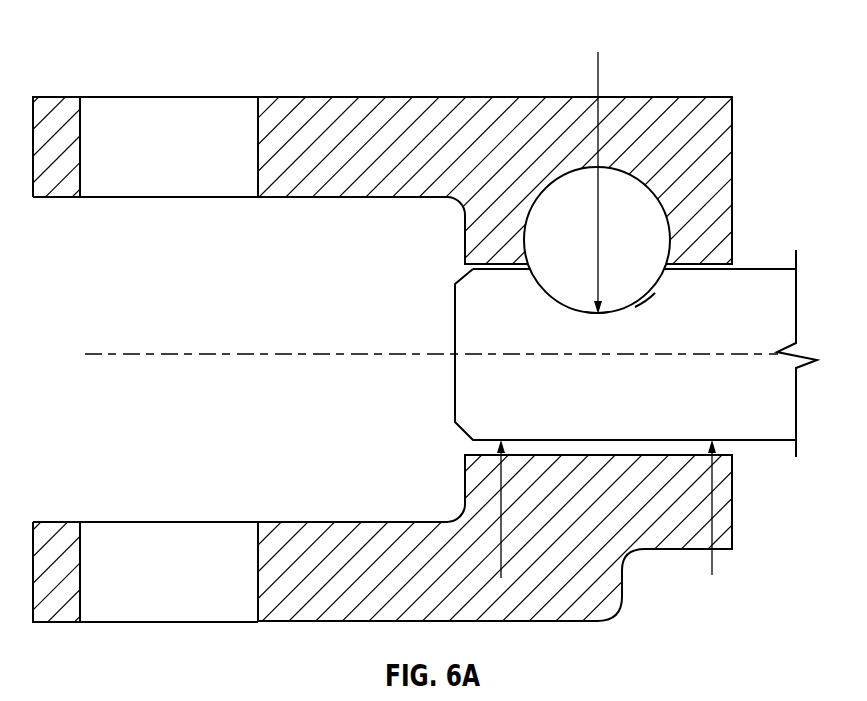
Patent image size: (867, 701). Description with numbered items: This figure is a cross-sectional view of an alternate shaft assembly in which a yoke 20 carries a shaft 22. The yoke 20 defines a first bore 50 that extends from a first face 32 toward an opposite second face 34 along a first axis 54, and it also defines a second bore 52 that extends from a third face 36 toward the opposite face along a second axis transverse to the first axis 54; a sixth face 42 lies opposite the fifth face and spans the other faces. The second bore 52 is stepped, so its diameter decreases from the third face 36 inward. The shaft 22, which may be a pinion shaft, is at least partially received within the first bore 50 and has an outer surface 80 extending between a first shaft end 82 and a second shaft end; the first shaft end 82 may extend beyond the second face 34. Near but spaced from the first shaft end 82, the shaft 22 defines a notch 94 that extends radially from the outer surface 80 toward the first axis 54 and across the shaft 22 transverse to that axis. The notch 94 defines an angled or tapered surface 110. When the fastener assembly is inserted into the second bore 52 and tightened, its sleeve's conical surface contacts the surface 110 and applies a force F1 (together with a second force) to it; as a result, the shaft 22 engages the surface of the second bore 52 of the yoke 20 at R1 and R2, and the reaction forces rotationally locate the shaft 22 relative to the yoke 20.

The yoke 20 is at (230, 82).
The third face 36 is at (378, 152).
The sixth face 42 is at (400, 97).
The second bore 52 is at (664, 217).
The first face 32 is at (734, 147).
The shaft 22 is at (770, 246).
The outer surface 80 is at (777, 270).
The second face 34 is at (465, 224).
The first axis 54 is at (85, 354).
The notch 94 is at (623, 303).
The surface 110 is at (597, 315).
The first shaft end 82 is at (454, 400).
The first bore 50 is at (630, 457).
The contact location R1 is at (711, 514).
The contact location R2 is at (500, 543).
The force F1 is at (598, 74).